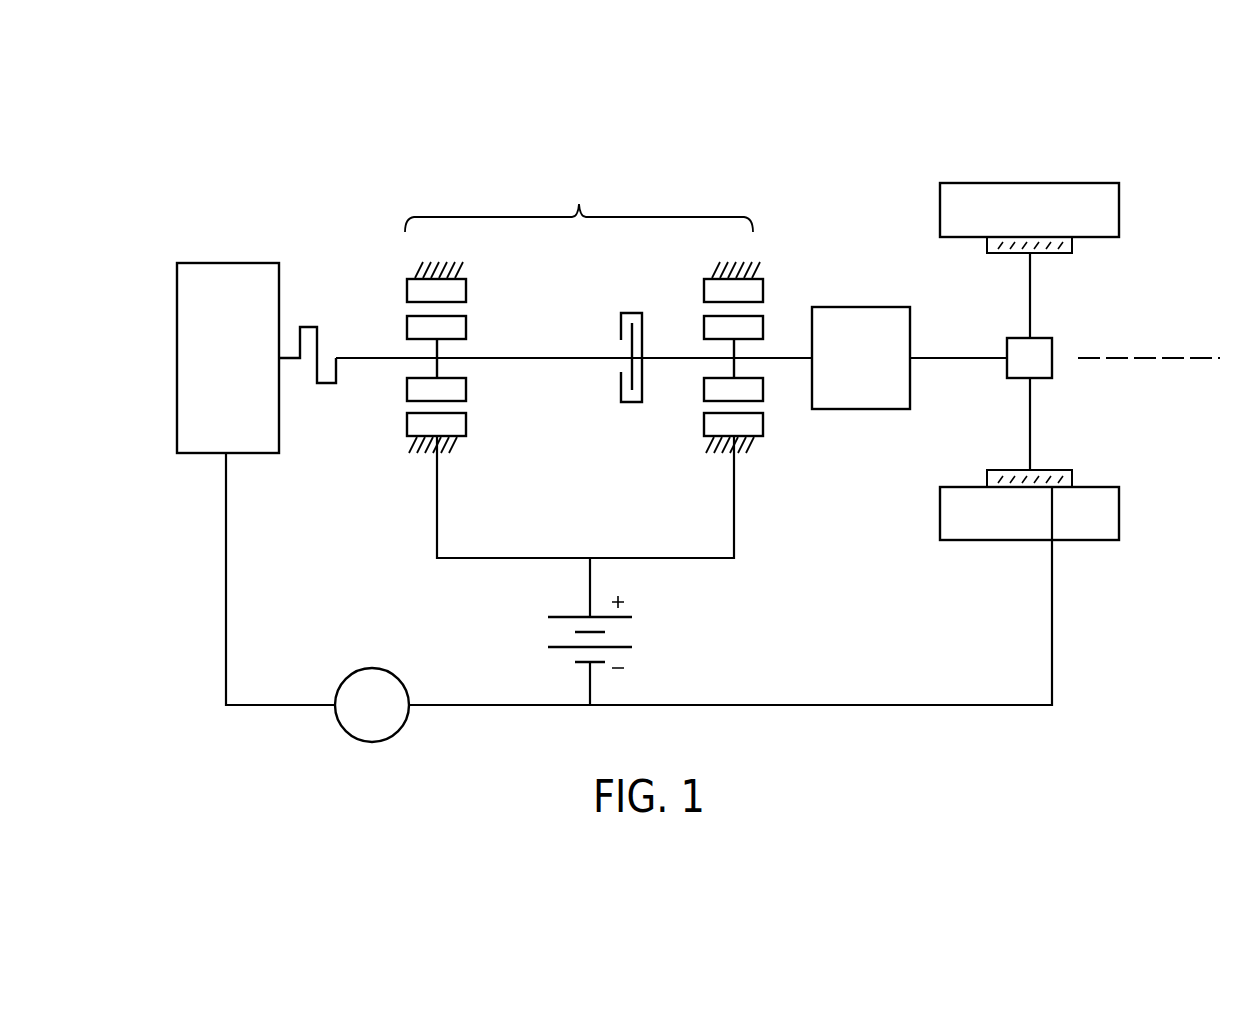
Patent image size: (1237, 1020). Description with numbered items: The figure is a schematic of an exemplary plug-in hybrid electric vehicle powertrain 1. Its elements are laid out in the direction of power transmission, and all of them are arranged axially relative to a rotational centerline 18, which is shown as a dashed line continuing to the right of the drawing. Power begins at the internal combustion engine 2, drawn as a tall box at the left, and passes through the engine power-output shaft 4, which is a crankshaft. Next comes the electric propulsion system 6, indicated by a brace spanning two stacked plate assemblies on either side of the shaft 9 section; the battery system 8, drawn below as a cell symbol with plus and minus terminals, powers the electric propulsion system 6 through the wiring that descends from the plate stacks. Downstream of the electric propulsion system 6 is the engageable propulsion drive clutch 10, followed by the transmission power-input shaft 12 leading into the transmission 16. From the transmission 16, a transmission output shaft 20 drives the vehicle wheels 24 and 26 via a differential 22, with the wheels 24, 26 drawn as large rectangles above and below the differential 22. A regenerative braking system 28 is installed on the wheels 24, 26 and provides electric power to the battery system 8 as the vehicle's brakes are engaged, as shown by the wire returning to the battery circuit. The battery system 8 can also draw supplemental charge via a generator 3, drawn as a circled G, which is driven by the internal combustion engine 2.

The PHEV powertrain 1 is at (1127, 146).
The internal combustion engine 2 is at (228, 263).
The generator 3 is at (372, 668).
The engine power-output shaft 4 is at (313, 327).
The electric propulsion system 6 is at (584, 313).
The battery system 8 is at (542, 633).
The input shaft 9 is at (592, 360).
The propulsion drive clutch 10 is at (631, 313).
The transmission power-input shaft 12 is at (678, 356).
The transmission 16 is at (862, 307).
The rotational centerline 18 is at (1165, 362).
The transmission output shaft 20 is at (955, 362).
The differential 22 is at (1040, 338).
The vehicle wheel 24 is at (1023, 183).
The vehicle wheel 26 is at (1015, 540).
The regenerative braking system 28 is at (1065, 470).